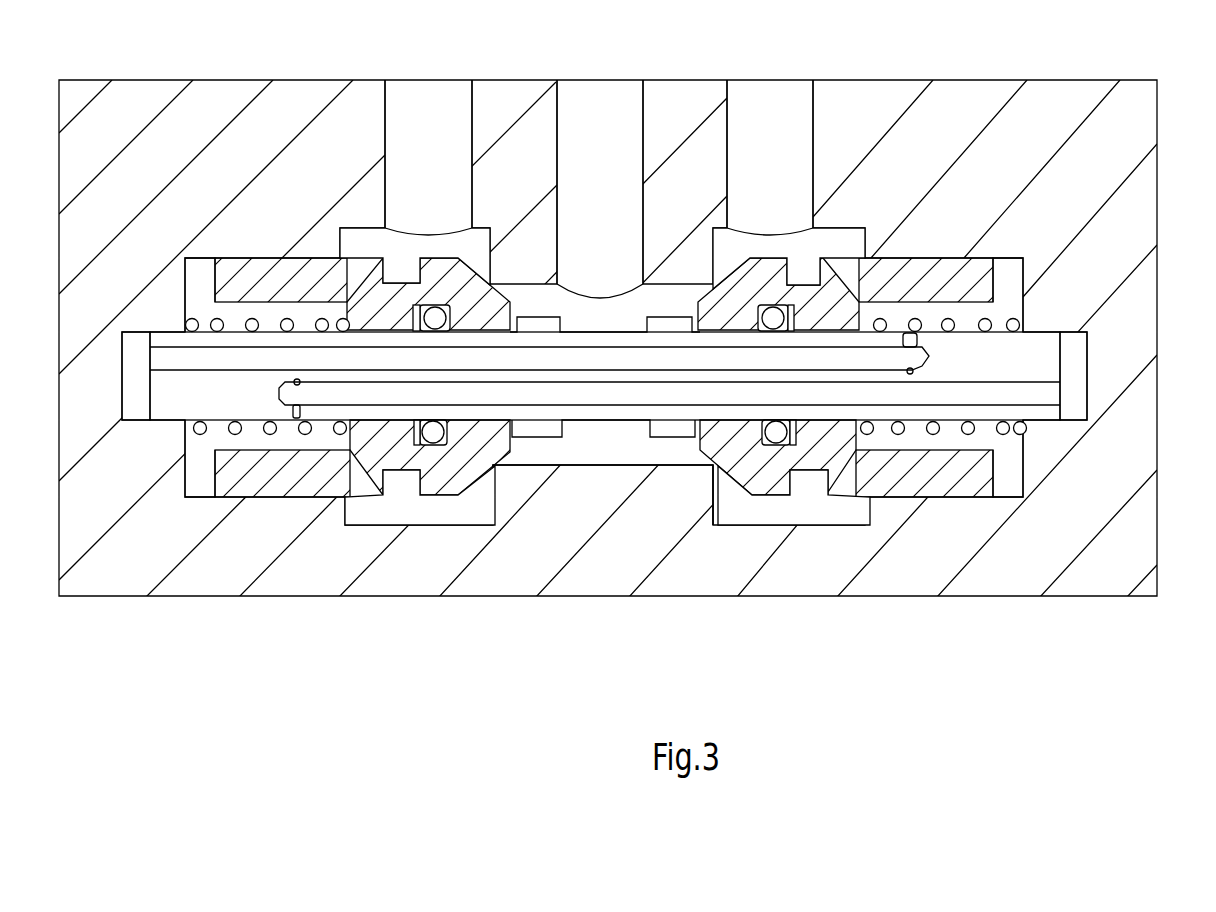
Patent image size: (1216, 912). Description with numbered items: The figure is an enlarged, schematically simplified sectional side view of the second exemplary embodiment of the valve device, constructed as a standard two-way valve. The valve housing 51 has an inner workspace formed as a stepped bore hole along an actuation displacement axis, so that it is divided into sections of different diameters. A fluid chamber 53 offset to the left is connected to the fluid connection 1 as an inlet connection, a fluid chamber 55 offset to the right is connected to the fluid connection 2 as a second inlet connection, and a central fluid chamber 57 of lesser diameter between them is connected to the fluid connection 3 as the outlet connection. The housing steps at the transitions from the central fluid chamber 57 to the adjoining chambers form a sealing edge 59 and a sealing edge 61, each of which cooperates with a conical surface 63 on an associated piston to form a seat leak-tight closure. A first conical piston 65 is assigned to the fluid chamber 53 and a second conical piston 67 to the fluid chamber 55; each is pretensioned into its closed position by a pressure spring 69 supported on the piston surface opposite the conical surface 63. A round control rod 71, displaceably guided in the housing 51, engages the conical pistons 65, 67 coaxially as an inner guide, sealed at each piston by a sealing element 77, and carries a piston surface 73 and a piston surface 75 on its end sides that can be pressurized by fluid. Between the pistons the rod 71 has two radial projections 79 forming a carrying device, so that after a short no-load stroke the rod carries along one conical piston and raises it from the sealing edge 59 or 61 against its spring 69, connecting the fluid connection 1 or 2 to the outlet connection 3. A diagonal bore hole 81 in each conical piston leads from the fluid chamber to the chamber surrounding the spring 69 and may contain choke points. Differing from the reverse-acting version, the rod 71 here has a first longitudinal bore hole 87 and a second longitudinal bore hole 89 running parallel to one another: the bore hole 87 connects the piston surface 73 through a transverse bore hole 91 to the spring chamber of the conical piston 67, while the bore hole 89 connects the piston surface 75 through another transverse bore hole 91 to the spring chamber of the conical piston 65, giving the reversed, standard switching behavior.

The fluid connection 1 is at (385, 103).
The fluid connection 2 is at (813, 105).
The fluid connection 3 is at (643, 102).
The valve housing 51 is at (1105, 143).
The fluid chamber 53 is at (416, 506).
The fluid chamber 55 is at (818, 512).
The central fluid chamber 57 is at (611, 460).
The sealing edge 59 is at (518, 468).
The sealing edge 61 is at (705, 456).
The conical surface 63 is at (490, 253).
The first conical piston 65 is at (380, 433).
The second conical piston 67 is at (763, 467).
The pressure spring 69 is at (272, 436).
The control rod 71 is at (585, 413).
The piston surface 73 is at (150, 393).
The piston surface 75 is at (1063, 393).
The sealing element 77 is at (434, 312).
The radial projection 79 is at (663, 322).
The diagonal bore hole 81 is at (375, 288).
The first longitudinal bore hole 87 is at (175, 368).
The second longitudinal bore hole 89 is at (987, 402).
The transverse bore hole 91 is at (293, 408).